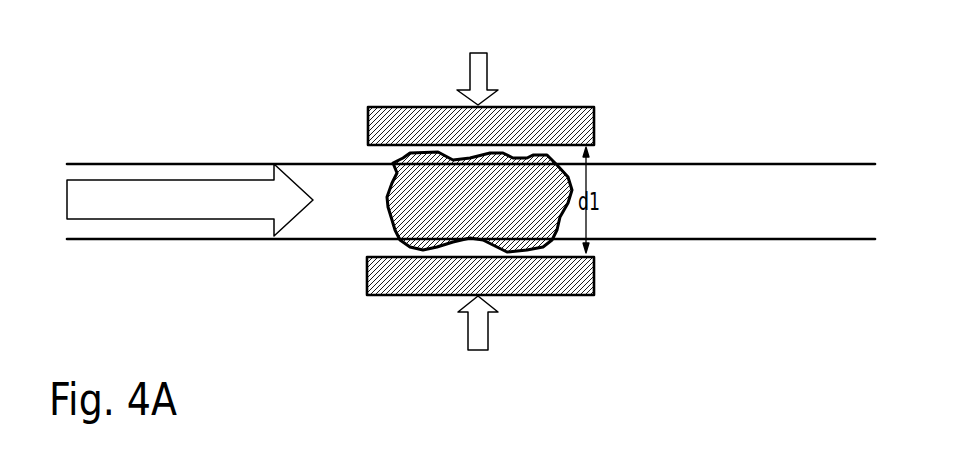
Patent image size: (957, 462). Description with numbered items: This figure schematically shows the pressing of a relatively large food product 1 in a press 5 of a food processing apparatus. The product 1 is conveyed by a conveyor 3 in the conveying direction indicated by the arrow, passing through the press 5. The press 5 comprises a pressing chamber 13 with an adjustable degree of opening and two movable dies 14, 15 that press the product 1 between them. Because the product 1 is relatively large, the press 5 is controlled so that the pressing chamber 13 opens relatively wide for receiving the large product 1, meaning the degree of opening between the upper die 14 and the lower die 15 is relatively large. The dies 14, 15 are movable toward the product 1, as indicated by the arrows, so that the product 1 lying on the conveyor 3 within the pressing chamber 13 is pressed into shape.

The food product 1 is at (512, 197).
The conveyor 3 is at (723, 162).
The press 5 is at (405, 316).
The pressing chamber 13 is at (392, 245).
The movable die 14 is at (395, 127).
The movable die 15 is at (567, 280).